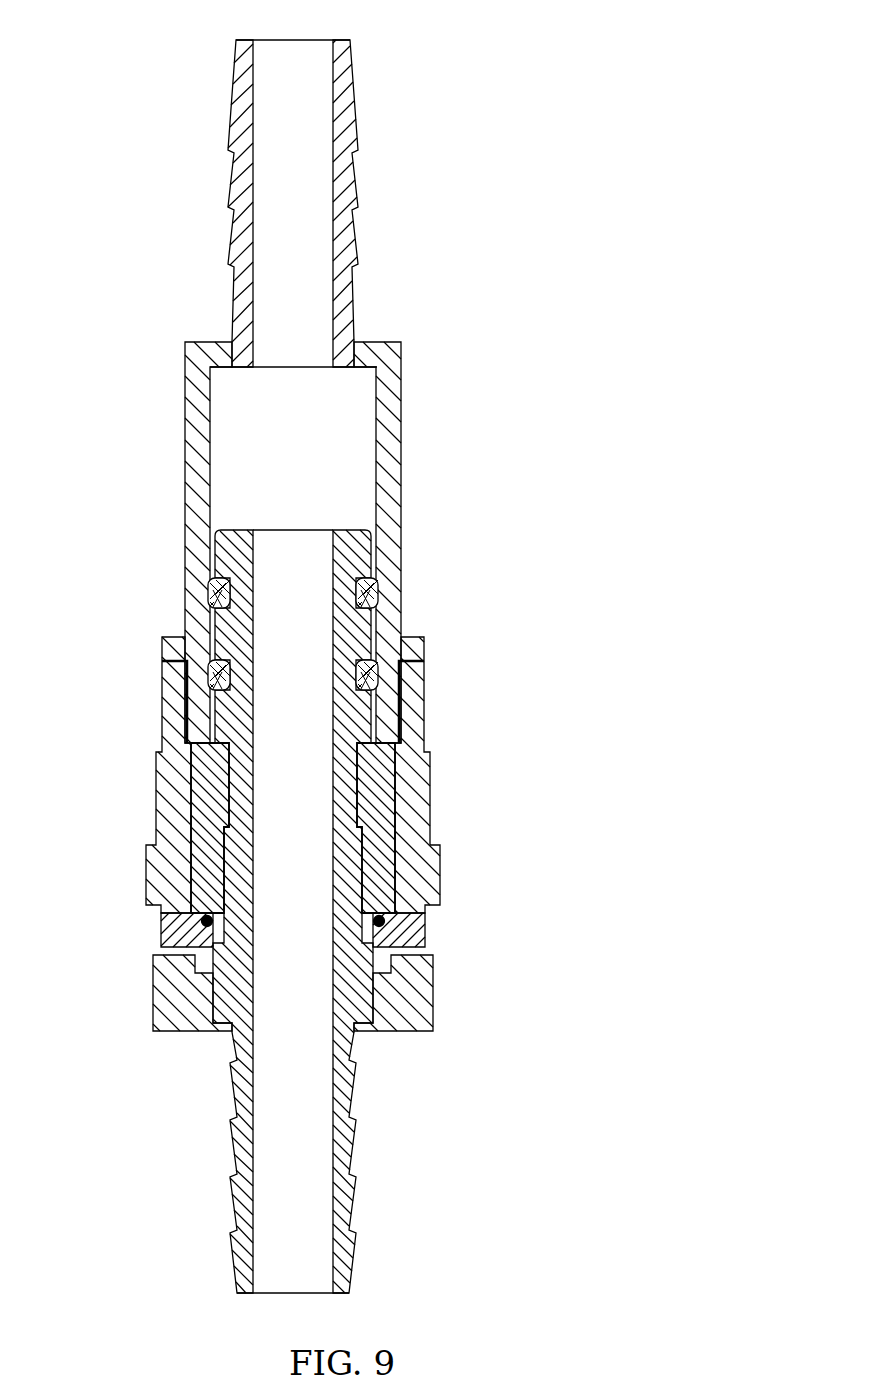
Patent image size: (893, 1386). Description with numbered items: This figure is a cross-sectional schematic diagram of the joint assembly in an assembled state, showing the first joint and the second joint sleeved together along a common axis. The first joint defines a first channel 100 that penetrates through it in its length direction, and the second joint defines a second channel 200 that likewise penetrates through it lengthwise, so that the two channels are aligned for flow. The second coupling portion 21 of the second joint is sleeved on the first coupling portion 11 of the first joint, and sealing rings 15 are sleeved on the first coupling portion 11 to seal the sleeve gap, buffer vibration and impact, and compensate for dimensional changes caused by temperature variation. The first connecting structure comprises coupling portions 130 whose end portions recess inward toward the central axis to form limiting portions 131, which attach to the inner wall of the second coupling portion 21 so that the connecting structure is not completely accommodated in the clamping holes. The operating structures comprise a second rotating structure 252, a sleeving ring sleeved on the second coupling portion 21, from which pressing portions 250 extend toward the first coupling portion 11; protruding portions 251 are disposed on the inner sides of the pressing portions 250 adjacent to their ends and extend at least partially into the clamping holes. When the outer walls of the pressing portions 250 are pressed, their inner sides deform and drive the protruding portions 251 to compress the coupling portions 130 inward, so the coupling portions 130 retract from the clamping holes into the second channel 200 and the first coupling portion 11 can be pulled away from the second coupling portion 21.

The second channel 200 is at (300, 62).
The second coupling portion 21 is at (383, 433).
The first channel 100 is at (298, 563).
The sealing rings 15 is at (375, 590).
The second rotating structure 252 is at (415, 703).
The pressing portions 250 is at (432, 787).
The coupling portions 130 is at (200, 832).
The limiting portions 131 is at (203, 930).
The protruding portions 251 is at (405, 930).
The first coupling portion 11 is at (373, 1008).